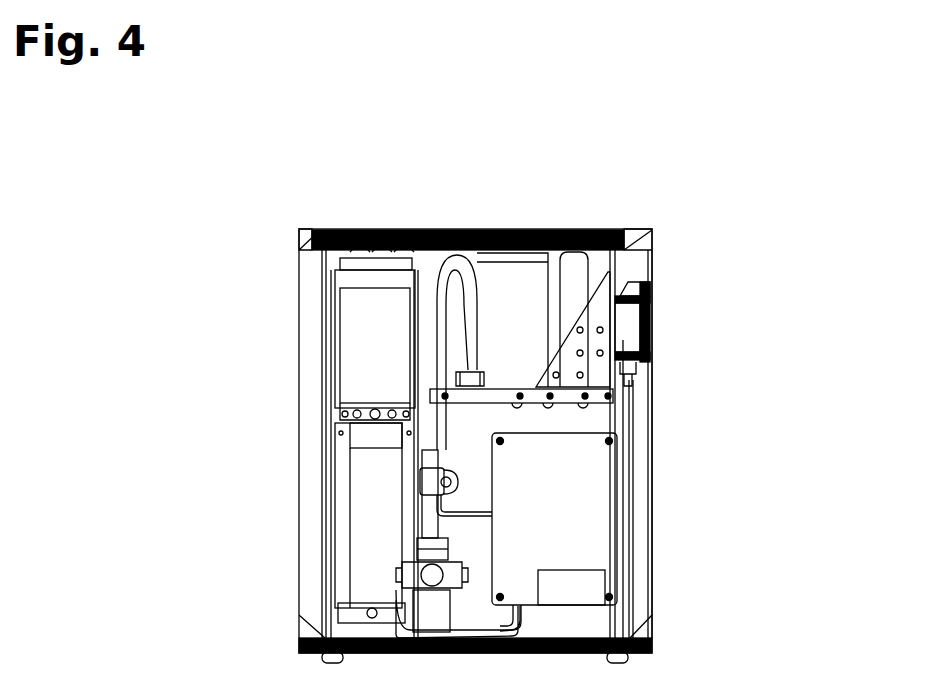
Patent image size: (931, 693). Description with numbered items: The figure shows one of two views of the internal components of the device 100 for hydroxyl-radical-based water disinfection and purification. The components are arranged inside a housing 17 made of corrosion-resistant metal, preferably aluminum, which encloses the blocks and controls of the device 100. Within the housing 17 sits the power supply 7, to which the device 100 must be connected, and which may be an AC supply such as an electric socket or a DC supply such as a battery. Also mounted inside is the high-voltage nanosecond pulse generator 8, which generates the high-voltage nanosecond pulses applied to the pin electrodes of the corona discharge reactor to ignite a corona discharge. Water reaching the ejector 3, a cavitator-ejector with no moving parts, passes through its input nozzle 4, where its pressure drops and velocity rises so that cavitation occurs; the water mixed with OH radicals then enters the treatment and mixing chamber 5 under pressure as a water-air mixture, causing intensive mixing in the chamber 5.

The device 100 is at (101, 110).
The high-voltage nanosecond pulse generator 8 is at (370, 339).
The power supply 7 is at (364, 501).
The input nozzle 4 is at (424, 486).
The ejector 3 is at (430, 603).
The treatment and mixing chamber 5 is at (585, 505).
The housing 17 is at (655, 586).